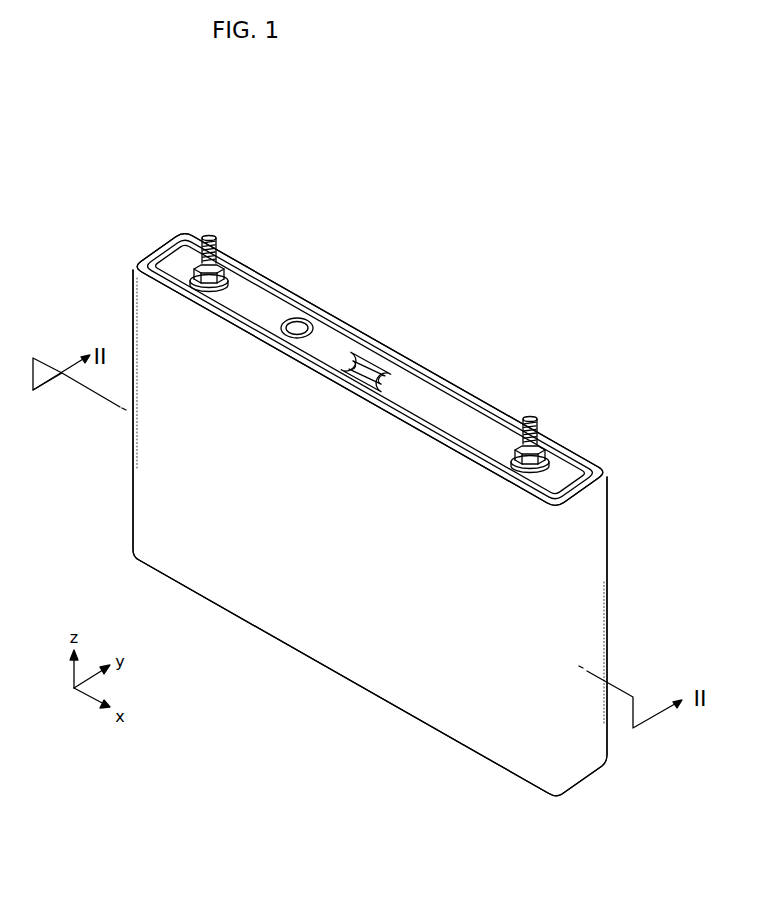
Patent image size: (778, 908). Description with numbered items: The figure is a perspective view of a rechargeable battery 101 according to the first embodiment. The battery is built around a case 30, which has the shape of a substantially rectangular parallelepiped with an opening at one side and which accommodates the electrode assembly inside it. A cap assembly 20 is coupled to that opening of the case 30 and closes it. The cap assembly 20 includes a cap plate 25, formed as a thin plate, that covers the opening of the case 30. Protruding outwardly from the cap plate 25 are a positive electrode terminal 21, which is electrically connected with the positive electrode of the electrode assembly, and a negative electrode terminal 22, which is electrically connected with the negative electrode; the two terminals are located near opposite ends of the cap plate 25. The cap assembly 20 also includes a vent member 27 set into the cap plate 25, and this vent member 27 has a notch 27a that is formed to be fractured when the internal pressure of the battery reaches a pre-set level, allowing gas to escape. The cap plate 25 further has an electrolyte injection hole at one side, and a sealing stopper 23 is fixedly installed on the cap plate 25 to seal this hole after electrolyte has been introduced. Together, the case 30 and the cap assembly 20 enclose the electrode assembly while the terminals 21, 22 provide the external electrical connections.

The rechargeable battery 101 is at (410, 191).
The cap assembly 20 is at (434, 363).
The positive electrode terminal 21 is at (210, 236).
The negative electrode terminal 22 is at (530, 418).
The sealing stopper 23 is at (298, 326).
The cap plate 25 is at (470, 412).
The vent member 27 is at (380, 373).
The notch 27a is at (361, 362).
The case 30 is at (333, 648).